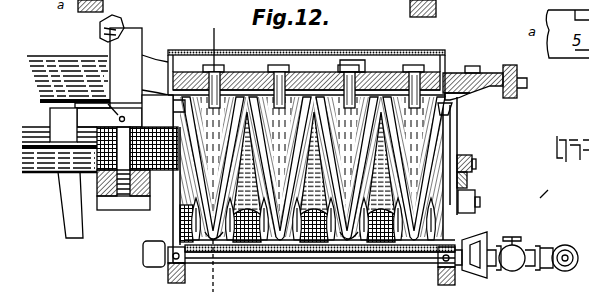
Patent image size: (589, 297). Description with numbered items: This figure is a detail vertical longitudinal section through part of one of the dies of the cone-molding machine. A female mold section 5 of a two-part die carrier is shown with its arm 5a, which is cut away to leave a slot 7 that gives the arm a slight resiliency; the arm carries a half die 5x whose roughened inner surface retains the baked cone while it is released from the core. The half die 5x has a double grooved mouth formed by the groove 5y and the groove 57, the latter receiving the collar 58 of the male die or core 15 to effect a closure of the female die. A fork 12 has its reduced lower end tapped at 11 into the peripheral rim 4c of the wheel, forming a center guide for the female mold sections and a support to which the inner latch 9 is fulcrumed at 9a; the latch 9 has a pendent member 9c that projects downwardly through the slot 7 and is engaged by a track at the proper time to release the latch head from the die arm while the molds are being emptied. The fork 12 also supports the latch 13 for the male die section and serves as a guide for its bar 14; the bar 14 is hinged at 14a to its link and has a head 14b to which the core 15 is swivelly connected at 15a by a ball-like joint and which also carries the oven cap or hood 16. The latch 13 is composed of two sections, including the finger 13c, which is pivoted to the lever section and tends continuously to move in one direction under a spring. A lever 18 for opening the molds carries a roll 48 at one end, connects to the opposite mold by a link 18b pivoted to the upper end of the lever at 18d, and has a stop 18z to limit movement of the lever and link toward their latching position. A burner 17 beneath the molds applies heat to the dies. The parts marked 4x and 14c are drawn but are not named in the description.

The peripheral rim 4c is at (113, 200).
The nut 4x is at (128, 210).
The mold section 5 is at (54, 174).
The arms 5a is at (45, 125).
The half die 5x is at (222, 244).
The groove 5y is at (178, 108).
The slot 7 is at (92, 172).
The inner latch 9 is at (96, 123).
The fulcrum 9a is at (72, 102).
The pendent member 9c is at (68, 238).
The tapped lower end 11 is at (142, 252).
The fork 12 is at (139, 65).
The latch 13 is at (215, 152).
The finger 13c is at (120, 22).
The bar 14 is at (58, 63).
The hinge 14a is at (508, 66).
The head 14b is at (350, 62).
The screw 14c is at (488, 76).
The male die 15 is at (398, 122).
The ball-like joint 15a is at (206, 65).
The hood 16 is at (232, 70).
The burner 17 is at (277, 250).
The lever 18 is at (540, 165).
The link 18b is at (474, 158).
The pivot 18d is at (553, 181).
The stop 18z is at (471, 180).
The roll 48 is at (480, 194).
The groove 57 is at (250, 95).
The collar 58 is at (372, 95).